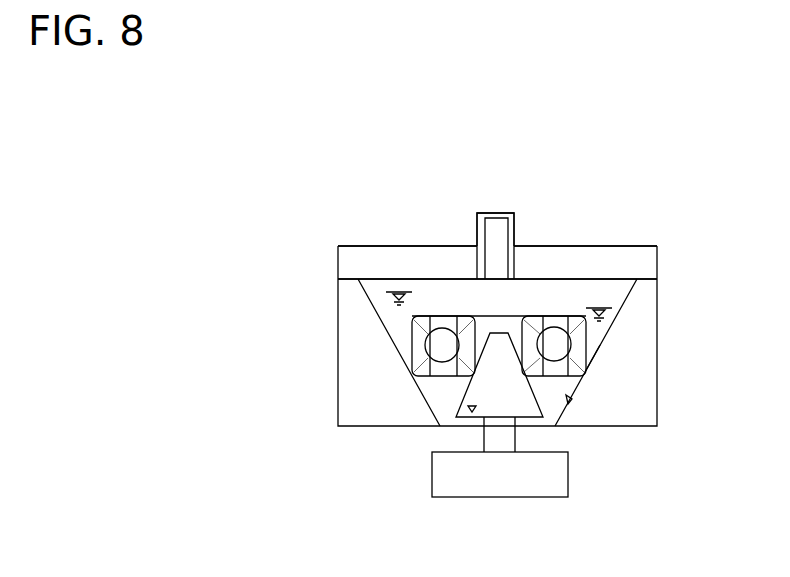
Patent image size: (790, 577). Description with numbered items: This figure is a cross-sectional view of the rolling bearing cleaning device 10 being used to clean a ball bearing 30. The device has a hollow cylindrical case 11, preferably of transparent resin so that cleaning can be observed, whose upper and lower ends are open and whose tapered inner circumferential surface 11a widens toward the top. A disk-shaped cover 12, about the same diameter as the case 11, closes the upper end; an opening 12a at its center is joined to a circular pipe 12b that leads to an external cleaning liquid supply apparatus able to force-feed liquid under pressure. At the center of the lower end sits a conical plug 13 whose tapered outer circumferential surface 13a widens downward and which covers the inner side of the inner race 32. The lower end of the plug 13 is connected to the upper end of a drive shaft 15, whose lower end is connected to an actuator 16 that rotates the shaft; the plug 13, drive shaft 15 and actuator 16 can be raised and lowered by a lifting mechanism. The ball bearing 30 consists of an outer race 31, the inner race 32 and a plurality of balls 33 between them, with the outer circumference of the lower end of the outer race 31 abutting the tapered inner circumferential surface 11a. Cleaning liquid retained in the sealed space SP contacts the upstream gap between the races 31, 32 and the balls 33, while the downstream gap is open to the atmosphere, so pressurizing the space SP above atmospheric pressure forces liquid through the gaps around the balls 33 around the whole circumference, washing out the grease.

The rolling bearing cleaning device 10 is at (336, 238).
The case 11 is at (640, 428).
The tapered inner circumferential surface 11a is at (568, 403).
The cover 12 is at (657, 246).
The opening 12a is at (477, 246).
The circular pipe 12b is at (508, 213).
The plug 13 is at (468, 416).
The tapered outer circumferential surface 13a is at (460, 406).
The drive shaft 15 is at (490, 437).
The actuator 16 is at (517, 487).
The ball bearing 30 is at (509, 285).
The outer race 31 is at (412, 350).
The inner race 32 is at (458, 323).
The balls 33 is at (437, 328).
The sealed space SP is at (562, 292).